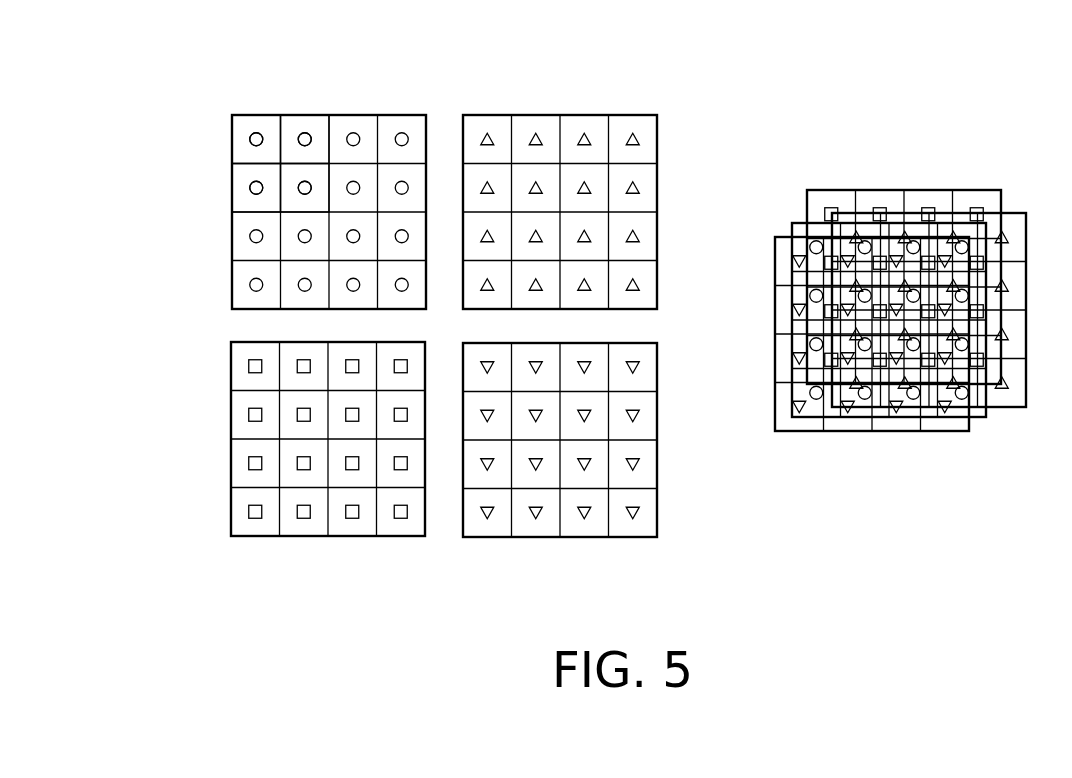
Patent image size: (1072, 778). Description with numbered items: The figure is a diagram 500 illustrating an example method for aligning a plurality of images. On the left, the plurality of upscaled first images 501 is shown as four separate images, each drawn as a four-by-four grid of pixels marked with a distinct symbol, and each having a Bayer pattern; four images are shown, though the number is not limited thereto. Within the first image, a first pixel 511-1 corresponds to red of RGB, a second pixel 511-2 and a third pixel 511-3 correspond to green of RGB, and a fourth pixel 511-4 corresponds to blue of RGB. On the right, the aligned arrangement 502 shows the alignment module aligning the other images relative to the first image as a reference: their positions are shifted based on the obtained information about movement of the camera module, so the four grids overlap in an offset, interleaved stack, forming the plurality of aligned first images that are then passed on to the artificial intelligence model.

The diagram 500 is at (984, 79).
The plurality of upscaled first images 501 is at (465, 616).
The aligned plurality of upscaled first images 502 is at (913, 496).
The first pixel 511-1 is at (242, 133).
The second pixel 511-2 is at (242, 173).
The third pixel 511-3 is at (292, 125).
The fourth pixel 511-4 is at (292, 198).